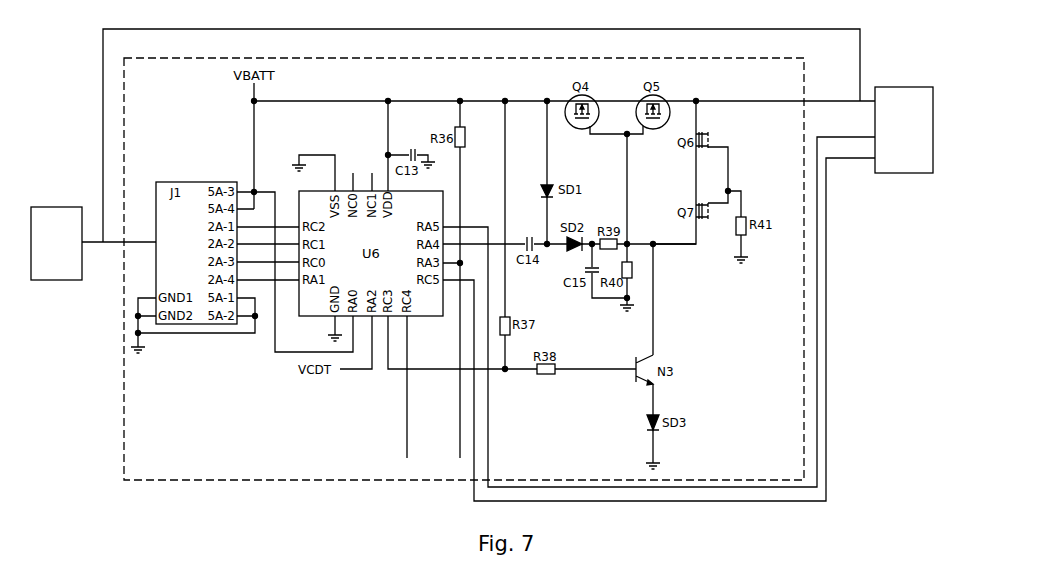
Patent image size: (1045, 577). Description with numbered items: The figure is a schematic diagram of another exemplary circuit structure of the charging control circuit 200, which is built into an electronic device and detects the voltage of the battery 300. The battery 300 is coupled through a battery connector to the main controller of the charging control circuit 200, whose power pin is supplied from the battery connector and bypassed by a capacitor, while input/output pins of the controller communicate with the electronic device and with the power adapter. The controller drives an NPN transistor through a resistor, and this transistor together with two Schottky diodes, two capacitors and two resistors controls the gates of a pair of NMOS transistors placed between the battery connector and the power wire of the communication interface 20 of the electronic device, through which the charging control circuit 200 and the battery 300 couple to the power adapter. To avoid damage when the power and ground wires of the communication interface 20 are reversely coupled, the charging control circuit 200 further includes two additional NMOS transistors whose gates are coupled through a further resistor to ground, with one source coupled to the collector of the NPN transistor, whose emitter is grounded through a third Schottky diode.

The battery 300 is at (43, 205).
The charging control circuit 200 is at (805, 74).
The communication interface of the electronic device 20 is at (919, 87).